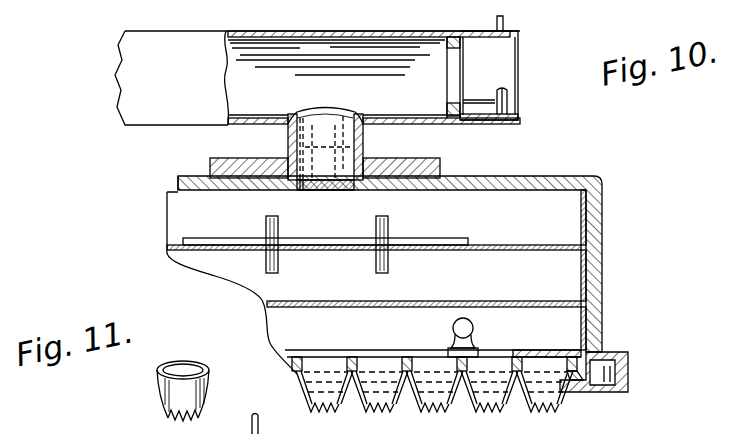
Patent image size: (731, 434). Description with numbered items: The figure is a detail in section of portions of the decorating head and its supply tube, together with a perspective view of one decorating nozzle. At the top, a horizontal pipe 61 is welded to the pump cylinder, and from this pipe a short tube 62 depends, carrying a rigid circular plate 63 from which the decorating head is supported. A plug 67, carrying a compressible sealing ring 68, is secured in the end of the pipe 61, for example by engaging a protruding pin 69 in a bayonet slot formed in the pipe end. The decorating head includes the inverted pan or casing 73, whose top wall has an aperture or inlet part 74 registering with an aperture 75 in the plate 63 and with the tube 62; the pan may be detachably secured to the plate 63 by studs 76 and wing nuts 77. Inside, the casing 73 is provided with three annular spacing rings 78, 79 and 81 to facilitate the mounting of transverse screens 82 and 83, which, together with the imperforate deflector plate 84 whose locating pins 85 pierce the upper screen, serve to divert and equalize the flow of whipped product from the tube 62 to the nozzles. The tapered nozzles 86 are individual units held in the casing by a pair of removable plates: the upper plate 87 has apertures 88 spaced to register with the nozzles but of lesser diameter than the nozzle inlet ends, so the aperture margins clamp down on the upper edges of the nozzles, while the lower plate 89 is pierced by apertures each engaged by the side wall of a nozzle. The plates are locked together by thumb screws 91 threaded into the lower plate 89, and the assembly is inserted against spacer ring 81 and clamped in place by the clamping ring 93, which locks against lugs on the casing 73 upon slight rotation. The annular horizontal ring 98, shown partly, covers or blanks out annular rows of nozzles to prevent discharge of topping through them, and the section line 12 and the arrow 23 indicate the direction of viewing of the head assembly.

In FIG. 10, the section line 12 is at (444, 420).
In FIG. 10, the housing assembly 23 is at (608, 252).
In FIG. 10, the horizontal pipe 61 is at (150, 118).
In FIG. 10, the short tube 62 is at (287, 133).
In FIG. 10, the rigid circular plate 63 is at (408, 160).
In FIG. 10, the plug 67 is at (505, 48).
In FIG. 10, the compressible sealing ring 68 is at (455, 35).
In FIG. 10, the protruding pin 69 is at (512, 103).
In FIG. 10, the inverted pan or casing 73 is at (600, 203).
In FIG. 10, the aperture or inlet part 74 is at (350, 192).
In FIG. 10, the aperture 75 is at (345, 172).
In FIG. 10, the stud 76 is at (325, 147).
In FIG. 10, the wing nut 77 is at (343, 115).
In FIG. 10, the annular spacing ring 78 is at (581, 222).
In FIG. 10, the annular spacing ring 79 is at (581, 282).
In FIG. 10, the annular spacing ring 81 is at (581, 323).
In FIG. 10, the transverse screen 82 is at (500, 245).
In FIG. 10, the transverse screen 83 is at (482, 300).
In FIG. 10, the imperforate deflector plate 84 is at (420, 240).
In FIG. 10, the locating pin 85 is at (266, 230).
In FIG. 10, the tapered nozzle 86 is at (505, 403).
In FIG. 11, the tapered nozzle 86 is at (158, 397).
In FIG. 10, the upper plate 87 is at (353, 357).
In FIG. 10, the aperture 88 is at (343, 363).
In FIG. 10, the lower plate 89 is at (575, 382).
In FIG. 10, the thumb screw 91 is at (474, 327).
In FIG. 10, the clamping ring 93 is at (628, 366).
In FIG. 10, the annular horizontal ring 98 is at (552, 353).